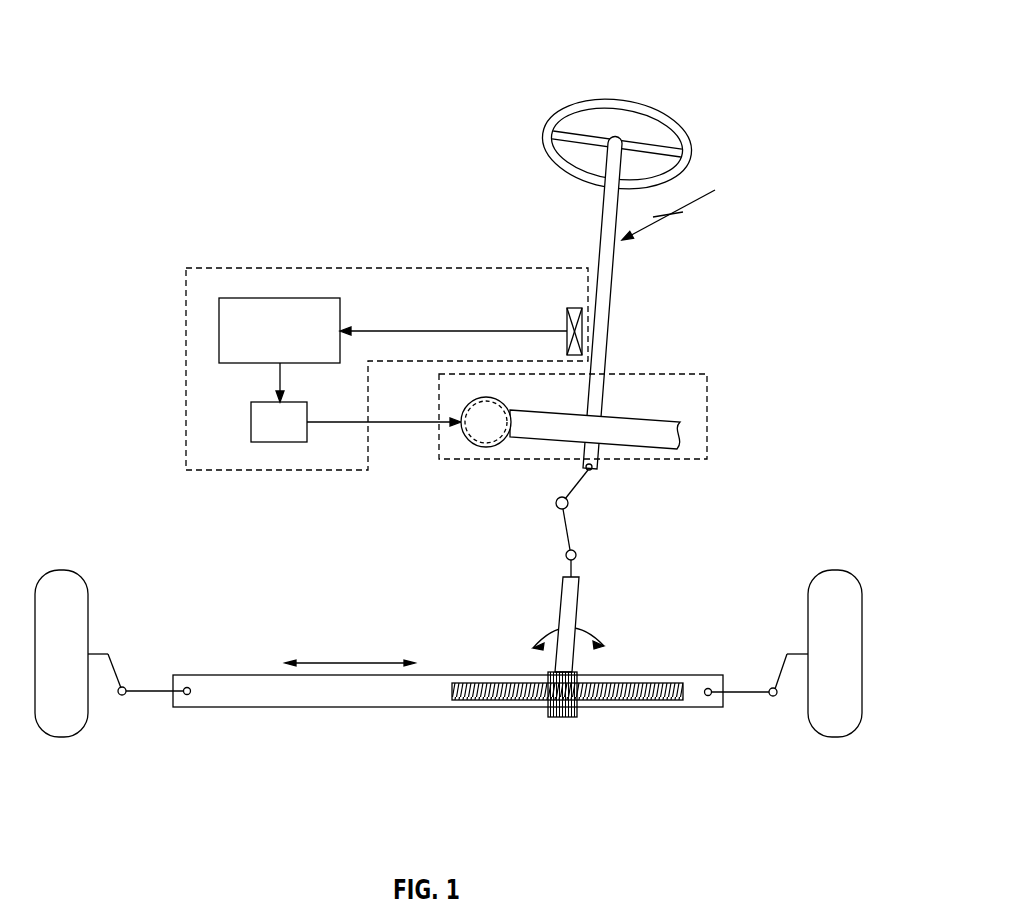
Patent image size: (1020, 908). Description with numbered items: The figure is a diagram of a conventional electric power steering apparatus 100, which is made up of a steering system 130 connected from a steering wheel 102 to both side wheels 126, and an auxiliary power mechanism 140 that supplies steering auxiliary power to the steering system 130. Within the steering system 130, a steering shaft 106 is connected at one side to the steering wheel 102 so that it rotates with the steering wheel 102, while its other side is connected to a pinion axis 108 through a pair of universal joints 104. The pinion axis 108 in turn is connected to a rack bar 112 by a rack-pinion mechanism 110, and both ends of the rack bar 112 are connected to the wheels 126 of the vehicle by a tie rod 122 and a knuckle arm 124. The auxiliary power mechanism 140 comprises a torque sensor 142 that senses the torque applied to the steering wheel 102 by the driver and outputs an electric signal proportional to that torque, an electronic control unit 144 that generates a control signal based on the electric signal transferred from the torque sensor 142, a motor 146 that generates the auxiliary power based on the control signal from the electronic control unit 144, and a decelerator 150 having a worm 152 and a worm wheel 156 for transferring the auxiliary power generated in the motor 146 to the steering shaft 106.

The electric power steering apparatus 100 is at (250, 33).
The steering wheel 102 is at (546, 121).
The universal joints 104 is at (578, 489).
The steering shaft 106 is at (614, 258).
The pinion axis 108 is at (563, 612).
The rack-pinion mechanism 110 is at (601, 707).
The rack bar 112 is at (258, 685).
The tie rod 122 is at (756, 689).
The knuckle arm 124 is at (100, 654).
The wheels 126 is at (847, 582).
The steering system 130 is at (691, 206).
The auxiliary power mechanism 140 is at (186, 312).
The torque sensor 142 is at (567, 322).
The electronic control unit 144 is at (334, 312).
The motor 146 is at (251, 421).
The decelerator 150 is at (707, 425).
The worm 152 is at (487, 430).
The worm wheel 156 is at (610, 415).